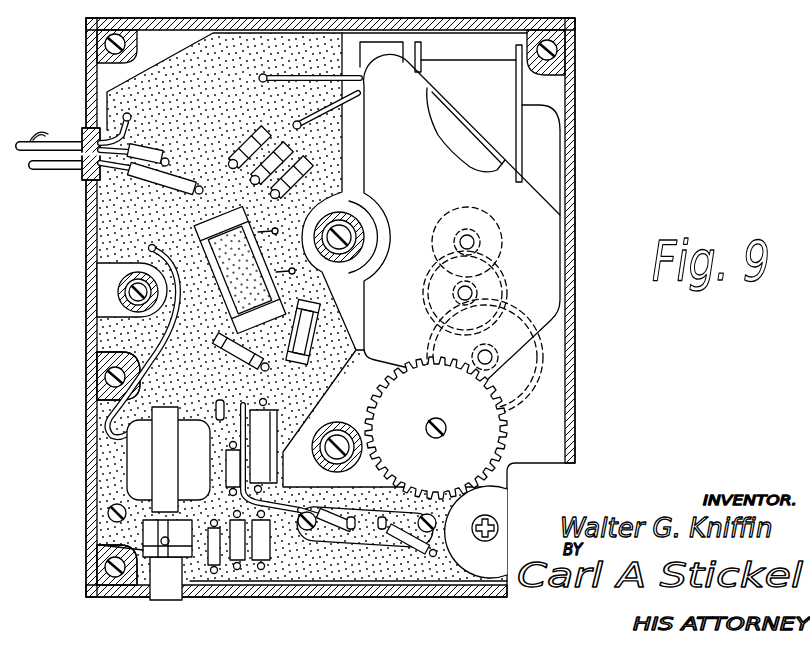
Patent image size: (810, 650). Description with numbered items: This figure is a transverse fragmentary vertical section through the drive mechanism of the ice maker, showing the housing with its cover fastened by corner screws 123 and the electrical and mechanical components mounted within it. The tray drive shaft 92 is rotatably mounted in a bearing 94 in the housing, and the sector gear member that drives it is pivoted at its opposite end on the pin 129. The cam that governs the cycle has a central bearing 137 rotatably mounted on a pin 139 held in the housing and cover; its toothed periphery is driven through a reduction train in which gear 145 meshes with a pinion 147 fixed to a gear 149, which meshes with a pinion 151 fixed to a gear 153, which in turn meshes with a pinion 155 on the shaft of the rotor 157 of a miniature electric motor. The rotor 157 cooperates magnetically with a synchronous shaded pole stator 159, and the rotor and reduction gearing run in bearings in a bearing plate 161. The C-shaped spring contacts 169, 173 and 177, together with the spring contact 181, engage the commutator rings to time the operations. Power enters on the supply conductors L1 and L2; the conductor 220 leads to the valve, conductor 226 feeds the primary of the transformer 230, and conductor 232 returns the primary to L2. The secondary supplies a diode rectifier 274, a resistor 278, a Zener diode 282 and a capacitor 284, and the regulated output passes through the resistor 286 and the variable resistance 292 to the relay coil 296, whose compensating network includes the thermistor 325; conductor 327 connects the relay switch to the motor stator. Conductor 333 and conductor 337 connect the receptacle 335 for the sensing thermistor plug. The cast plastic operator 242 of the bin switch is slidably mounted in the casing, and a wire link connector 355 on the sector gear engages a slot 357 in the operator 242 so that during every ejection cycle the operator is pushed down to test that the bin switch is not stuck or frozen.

The screws 123 is at (105, 47).
The pin 129 is at (143, 307).
The conductor 220 is at (82, 163).
The supply conductor L1 is at (147, 155).
The supply conductor L2 is at (133, 133).
The cast plastic operator 242 is at (152, 600).
The spring contact 177 is at (247, 138).
The spring contact 173 is at (277, 147).
The spring contact 169 is at (310, 170).
The conductor 327 is at (327, 117).
The relay coil 296 is at (225, 270).
The compensating thermistor 325 is at (310, 310).
The spring contact 181 is at (240, 350).
The conductor 232 is at (167, 250).
The transformer 230 is at (133, 467).
The wire link connector 355 is at (143, 533).
The slot 357 is at (100, 545).
The conductor 226 is at (213, 417).
The Zener diode 282 is at (237, 417).
The capacitor 284 is at (283, 413).
The diode rectifier 274 is at (212, 577).
The resistor 278 is at (243, 567).
The resistor 286 is at (330, 520).
The conductor 337 is at (345, 535).
The receptacle 335 is at (370, 535).
The conductor 333 is at (431, 553).
The bearing 94 is at (338, 422).
The tray drive shaft 92 is at (323, 463).
The central bearing 137 is at (360, 205).
The pin 139 is at (360, 232).
The stator 159 is at (547, 128).
The bearing plate 161 is at (462, 140).
The rotor 157 is at (460, 207).
The pinion 155 is at (474, 243).
The gear 153 is at (503, 275).
The pinion 151 is at (478, 295).
The pinion 147 is at (503, 370).
The gear 149 is at (513, 355).
The gear 145 is at (493, 440).
The variable resistance 292 is at (485, 565).